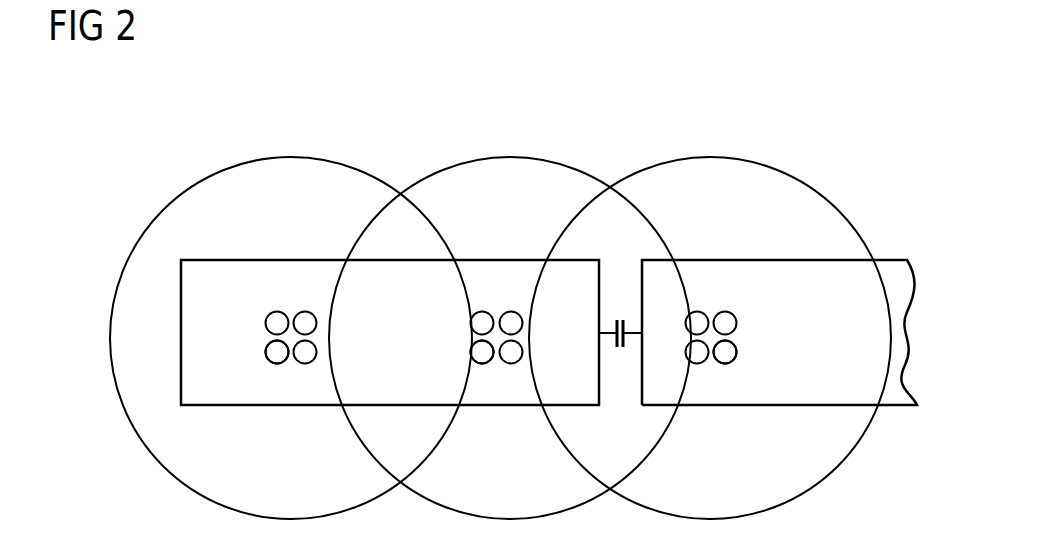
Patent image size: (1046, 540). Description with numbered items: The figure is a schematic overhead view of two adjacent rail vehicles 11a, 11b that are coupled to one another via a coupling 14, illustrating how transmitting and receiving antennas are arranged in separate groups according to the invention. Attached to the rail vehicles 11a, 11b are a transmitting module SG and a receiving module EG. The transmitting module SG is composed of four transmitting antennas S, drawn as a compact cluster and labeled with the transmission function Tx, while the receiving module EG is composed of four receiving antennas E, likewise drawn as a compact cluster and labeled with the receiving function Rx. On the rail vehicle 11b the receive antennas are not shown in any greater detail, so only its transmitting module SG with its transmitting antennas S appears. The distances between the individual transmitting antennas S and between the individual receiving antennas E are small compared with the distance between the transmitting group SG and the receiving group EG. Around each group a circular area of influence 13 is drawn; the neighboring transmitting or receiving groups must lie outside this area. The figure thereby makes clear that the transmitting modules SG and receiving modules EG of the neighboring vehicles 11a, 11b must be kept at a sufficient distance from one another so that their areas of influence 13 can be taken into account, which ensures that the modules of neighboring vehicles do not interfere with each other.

The area of influence 13 is at (276, 157).
The rail vehicle 11a is at (245, 260).
The rail vehicle 11b is at (745, 260).
The coupling 14 is at (619, 318).
The transmitting module SG is at (248, 331).
The transmitting antenna S is at (275, 352).
The receiving module EG is at (450, 331).
The receiving antenna E is at (482, 352).
The transmission function Tx is at (498, 315).
The receiving function Rx is at (463, 315).